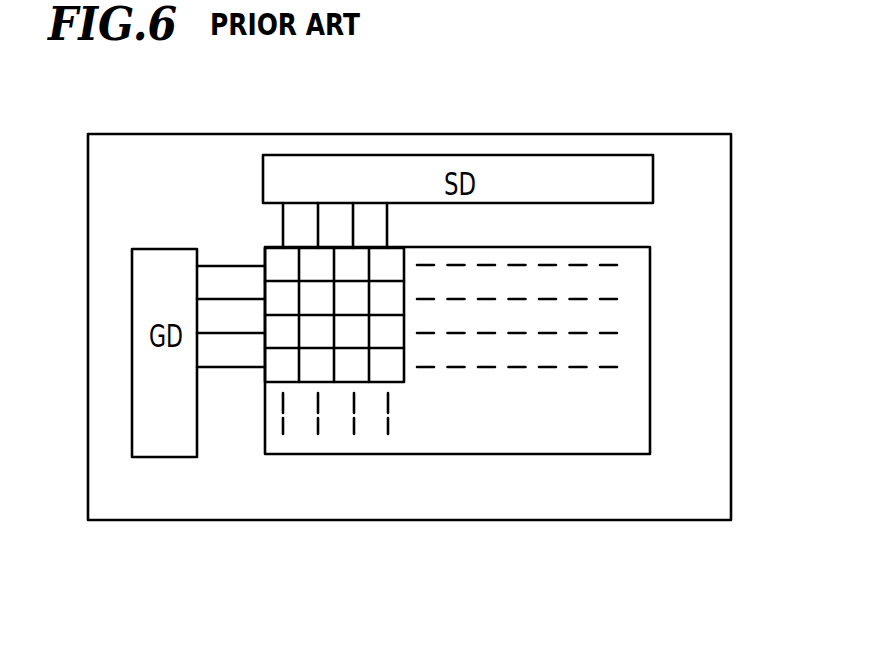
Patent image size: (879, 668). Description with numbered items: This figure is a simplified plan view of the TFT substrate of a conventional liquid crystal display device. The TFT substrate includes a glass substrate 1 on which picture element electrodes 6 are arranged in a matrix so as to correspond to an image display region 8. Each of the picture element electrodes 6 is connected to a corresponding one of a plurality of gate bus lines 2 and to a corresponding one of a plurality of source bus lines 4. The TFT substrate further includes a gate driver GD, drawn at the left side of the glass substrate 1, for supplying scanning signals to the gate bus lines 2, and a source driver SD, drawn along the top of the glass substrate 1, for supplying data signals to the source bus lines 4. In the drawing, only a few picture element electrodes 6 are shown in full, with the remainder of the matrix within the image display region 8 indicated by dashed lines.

The glass substrate 1 is at (700, 170).
The gate bus lines 2 is at (216, 263).
The source bus lines 4 is at (350, 222).
The picture element electrodes 6 is at (310, 373).
The image display region 8 is at (612, 425).